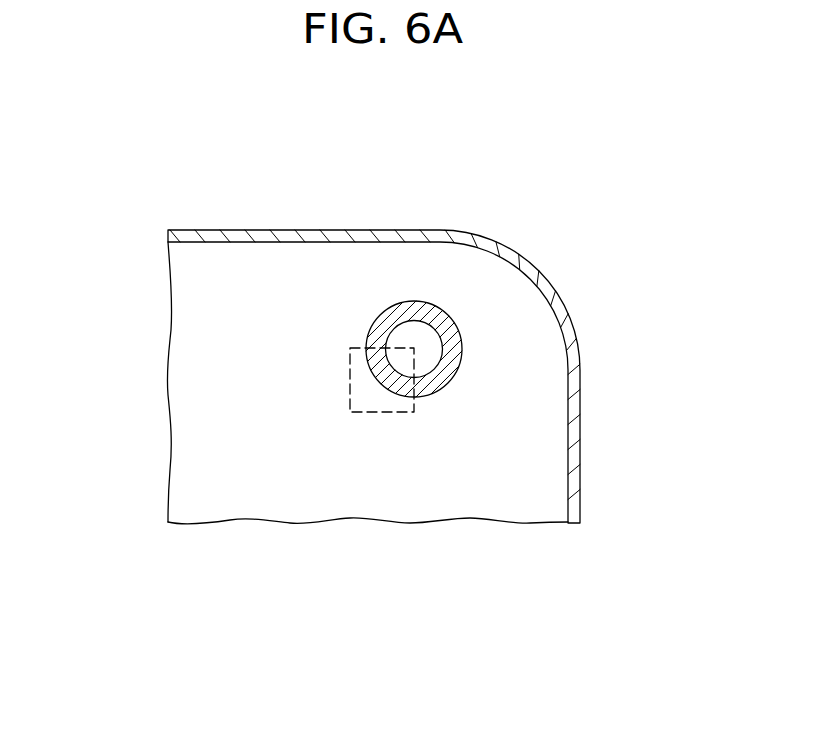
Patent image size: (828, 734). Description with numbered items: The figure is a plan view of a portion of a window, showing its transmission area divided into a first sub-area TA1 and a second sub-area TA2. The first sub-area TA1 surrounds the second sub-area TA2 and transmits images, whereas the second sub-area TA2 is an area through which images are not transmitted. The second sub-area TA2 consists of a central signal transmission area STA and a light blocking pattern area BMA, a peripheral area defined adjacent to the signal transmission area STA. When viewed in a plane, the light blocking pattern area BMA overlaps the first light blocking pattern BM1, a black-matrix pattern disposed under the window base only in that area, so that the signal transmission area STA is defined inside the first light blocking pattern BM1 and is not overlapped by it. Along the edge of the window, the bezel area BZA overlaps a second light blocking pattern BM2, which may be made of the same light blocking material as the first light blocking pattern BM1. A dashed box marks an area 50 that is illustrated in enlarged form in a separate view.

The first sub-area TA1 is at (548, 455).
The second sub-area TA2 is at (512, 155).
The bezel area BZA is at (258, 240).
The first light blocking pattern BM1 is at (378, 312).
The second light blocking pattern BM2 is at (220, 246).
The signal transmission area STA is at (410, 333).
The light blocking pattern area BMA is at (430, 310).
The area 50 is at (350, 390).